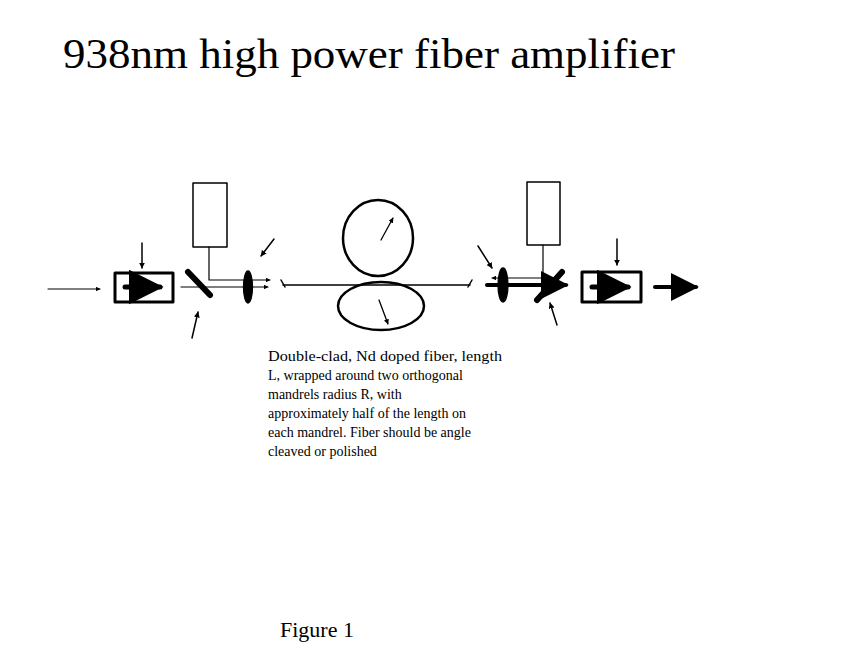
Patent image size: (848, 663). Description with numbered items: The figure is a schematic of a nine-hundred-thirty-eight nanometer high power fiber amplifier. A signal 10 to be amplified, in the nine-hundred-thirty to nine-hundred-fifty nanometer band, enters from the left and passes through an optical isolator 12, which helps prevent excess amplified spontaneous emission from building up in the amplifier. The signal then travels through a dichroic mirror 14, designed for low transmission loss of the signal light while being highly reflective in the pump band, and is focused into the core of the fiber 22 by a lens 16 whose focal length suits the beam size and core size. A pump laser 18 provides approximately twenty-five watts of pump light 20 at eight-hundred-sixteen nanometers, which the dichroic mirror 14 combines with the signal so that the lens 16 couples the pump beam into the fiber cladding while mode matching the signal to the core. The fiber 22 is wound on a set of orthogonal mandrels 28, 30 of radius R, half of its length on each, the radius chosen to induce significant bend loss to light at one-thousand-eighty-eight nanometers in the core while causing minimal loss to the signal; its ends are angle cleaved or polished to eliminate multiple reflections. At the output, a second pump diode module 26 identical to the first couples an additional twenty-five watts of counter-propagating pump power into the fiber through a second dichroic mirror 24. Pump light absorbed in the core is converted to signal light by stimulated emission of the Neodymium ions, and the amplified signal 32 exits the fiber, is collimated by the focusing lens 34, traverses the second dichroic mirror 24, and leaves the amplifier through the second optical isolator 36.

The signal 10 is at (56, 288).
The optical isolator 12 is at (133, 303).
The dichroic mirror 14 is at (200, 296).
The lens 16 is at (245, 270).
The pump laser 18 is at (202, 183).
The pump light 20 is at (202, 262).
The fiber 22 is at (332, 278).
The second dichroic mirror 24 is at (538, 298).
The second pump diode module 26 is at (540, 182).
The mandrel 28 is at (373, 221).
The mandrel 30 is at (345, 307).
The amplified signal 32 is at (672, 288).
The focusing lens 34 is at (510, 265).
The second optical isolator 36 is at (625, 303).